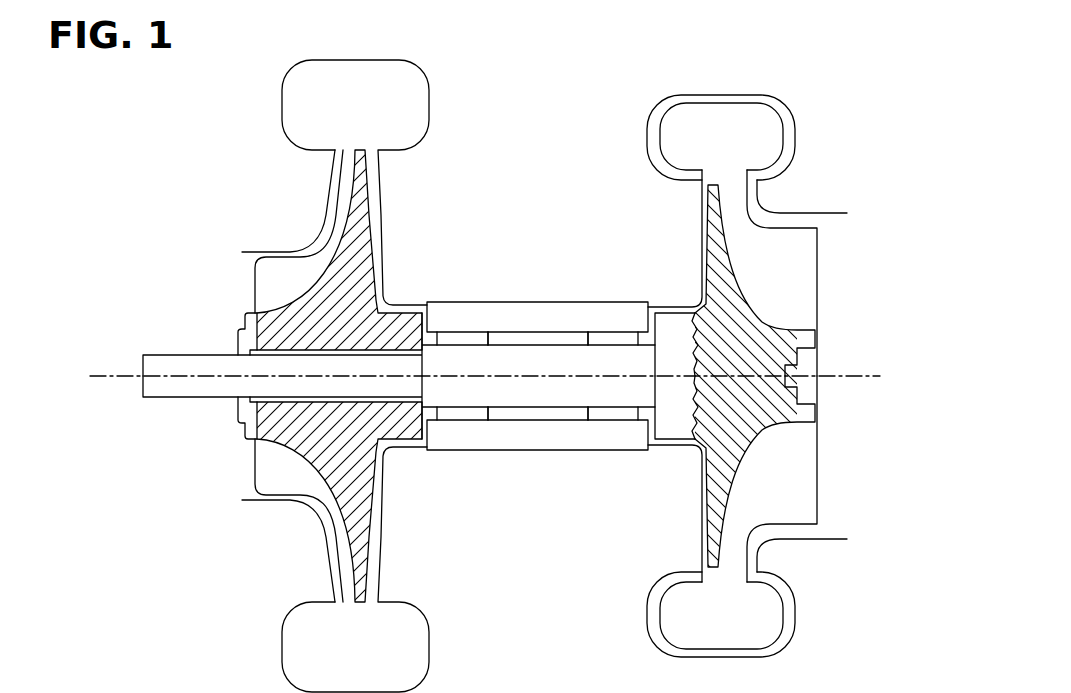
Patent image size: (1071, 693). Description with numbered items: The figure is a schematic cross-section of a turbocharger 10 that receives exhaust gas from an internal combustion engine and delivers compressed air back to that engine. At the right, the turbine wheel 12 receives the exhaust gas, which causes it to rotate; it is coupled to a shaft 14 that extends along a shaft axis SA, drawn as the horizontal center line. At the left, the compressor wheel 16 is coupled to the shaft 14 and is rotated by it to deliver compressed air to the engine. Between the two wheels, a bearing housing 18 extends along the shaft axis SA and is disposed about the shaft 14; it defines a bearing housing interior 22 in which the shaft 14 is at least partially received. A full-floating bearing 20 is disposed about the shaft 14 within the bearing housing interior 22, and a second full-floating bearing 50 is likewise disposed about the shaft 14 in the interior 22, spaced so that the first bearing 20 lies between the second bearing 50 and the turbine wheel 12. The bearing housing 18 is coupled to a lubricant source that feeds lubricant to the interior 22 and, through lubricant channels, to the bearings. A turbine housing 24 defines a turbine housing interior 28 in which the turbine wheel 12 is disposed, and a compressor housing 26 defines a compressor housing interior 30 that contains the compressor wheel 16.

The turbocharger 10 is at (535, 354).
The turbine wheel 12 is at (742, 428).
The shaft 14 is at (515, 355).
The compressor wheel 16 is at (322, 303).
The bearing housing 18 is at (535, 452).
The full-floating bearing 20 is at (612, 336).
The bearing housing interior 22 is at (546, 334).
The turbine housing 24 is at (803, 538).
The compressor housing 26 is at (273, 503).
The turbine housing interior 28 is at (847, 252).
The compressor housing interior 30 is at (238, 447).
The second full-floating bearing 50 is at (462, 424).
The shaft axis SA is at (826, 382).